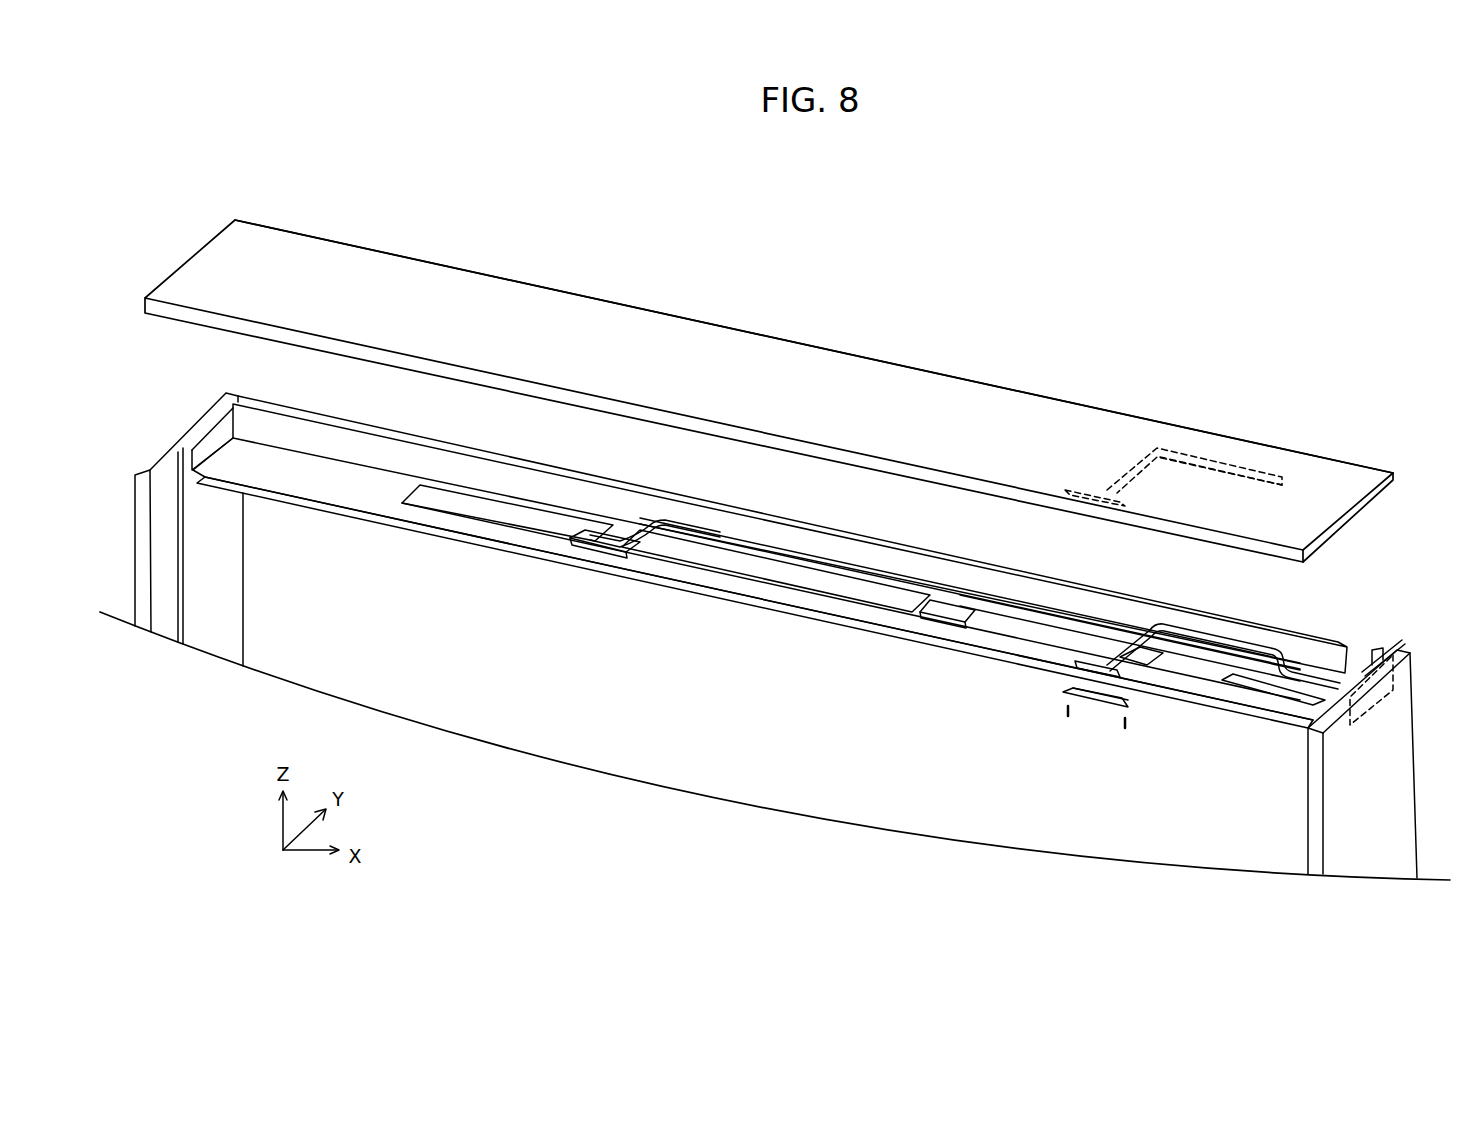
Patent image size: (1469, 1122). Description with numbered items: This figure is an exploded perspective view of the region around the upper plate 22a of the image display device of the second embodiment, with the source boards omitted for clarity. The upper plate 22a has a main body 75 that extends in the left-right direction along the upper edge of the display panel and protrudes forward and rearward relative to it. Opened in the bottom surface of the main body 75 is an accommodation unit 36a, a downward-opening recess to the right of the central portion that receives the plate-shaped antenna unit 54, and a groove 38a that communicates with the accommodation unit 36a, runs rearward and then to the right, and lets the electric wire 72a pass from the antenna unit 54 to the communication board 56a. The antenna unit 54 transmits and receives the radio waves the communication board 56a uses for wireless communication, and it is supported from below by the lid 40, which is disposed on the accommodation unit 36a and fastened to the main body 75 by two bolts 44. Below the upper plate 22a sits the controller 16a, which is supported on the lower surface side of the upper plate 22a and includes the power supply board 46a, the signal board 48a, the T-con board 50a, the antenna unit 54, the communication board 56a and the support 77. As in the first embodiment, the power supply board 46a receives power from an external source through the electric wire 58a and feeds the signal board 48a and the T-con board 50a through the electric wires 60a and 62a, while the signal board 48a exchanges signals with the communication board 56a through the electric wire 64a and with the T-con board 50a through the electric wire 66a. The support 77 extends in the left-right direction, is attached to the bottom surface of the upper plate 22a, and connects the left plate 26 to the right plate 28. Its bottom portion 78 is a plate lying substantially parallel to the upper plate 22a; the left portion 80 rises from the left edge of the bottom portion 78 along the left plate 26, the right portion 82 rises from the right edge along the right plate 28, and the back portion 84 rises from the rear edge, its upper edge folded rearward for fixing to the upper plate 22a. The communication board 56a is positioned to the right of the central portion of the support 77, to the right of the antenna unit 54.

The upper plate 22a is at (792, 338).
The main body 75 is at (910, 402).
The accommodation unit 36a is at (1087, 503).
The groove 38a is at (1228, 478).
The left plate 26 is at (163, 490).
The left portion 80 is at (215, 440).
The back portion 84 is at (403, 462).
The controller 16a is at (765, 622).
The support 77 is at (430, 537).
The signal board 48a is at (514, 512).
The bottom portion 78 is at (526, 541).
The electric wire 60a is at (610, 566).
The electric wire 66a is at (660, 547).
The electric wire 64a is at (752, 540).
The T-con board 50a is at (808, 582).
The electric wire 62a is at (948, 608).
The power supply board 46a is at (1006, 626).
The antenna unit 54 is at (1075, 666).
The lid 40 is at (1096, 702).
The bolt 44 is at (1066, 718).
The electric wire 72a is at (1120, 668).
The communication board 56a is at (1275, 692).
The electric wire 58a is at (1397, 642).
The right plate 28 is at (1362, 862).
The right portion 82 is at (1393, 690).